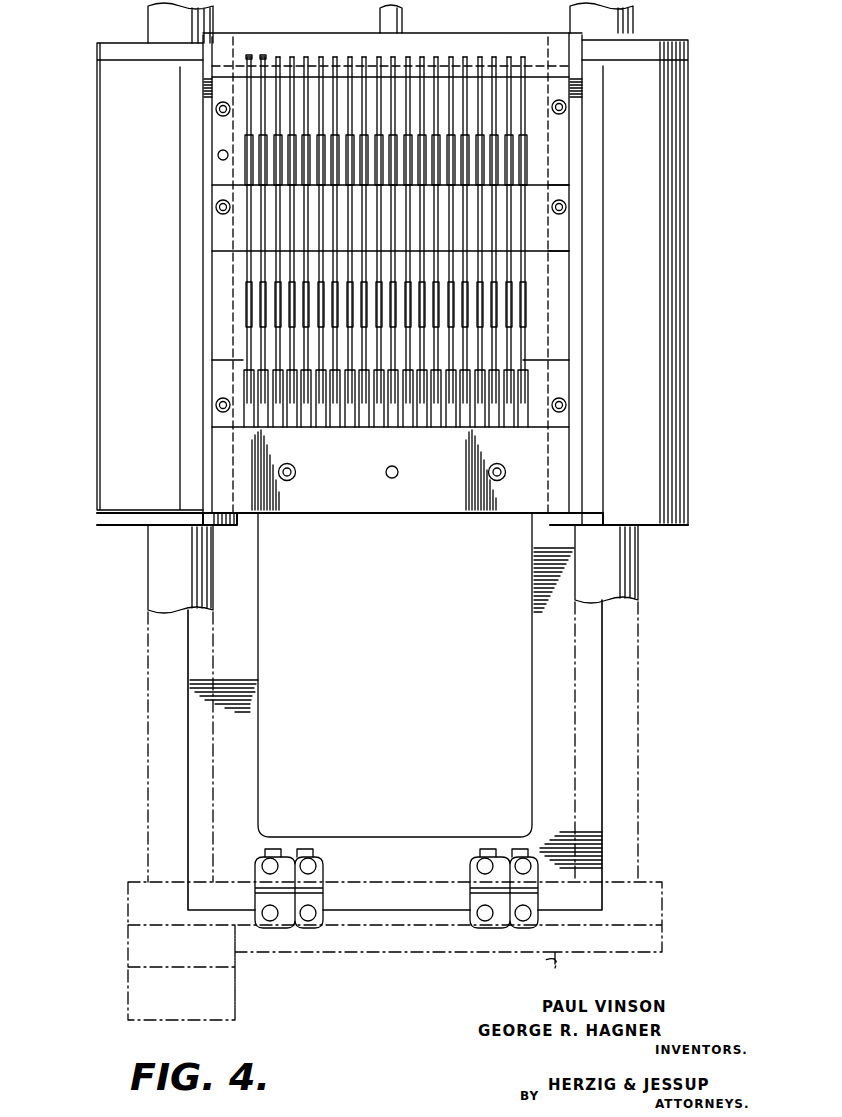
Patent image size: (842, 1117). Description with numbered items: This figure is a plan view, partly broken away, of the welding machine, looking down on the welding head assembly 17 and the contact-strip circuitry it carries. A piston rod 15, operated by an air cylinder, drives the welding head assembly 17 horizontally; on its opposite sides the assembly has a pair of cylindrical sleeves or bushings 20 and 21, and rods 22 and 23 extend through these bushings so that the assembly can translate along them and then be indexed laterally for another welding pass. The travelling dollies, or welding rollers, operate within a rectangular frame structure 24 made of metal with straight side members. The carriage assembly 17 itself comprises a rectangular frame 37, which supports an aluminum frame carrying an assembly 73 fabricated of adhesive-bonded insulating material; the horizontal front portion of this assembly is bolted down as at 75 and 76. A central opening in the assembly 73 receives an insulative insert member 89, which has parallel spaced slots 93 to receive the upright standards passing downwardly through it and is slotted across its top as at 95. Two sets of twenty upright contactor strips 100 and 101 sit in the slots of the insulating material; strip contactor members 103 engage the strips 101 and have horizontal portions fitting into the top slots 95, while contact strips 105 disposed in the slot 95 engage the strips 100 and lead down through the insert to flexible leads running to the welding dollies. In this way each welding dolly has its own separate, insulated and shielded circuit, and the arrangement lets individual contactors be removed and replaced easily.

The piston rod 15 is at (402, 16).
The welding head assembly 17 is at (420, 500).
The cylindrical sleeve or bushing 20 is at (100, 315).
The cylindrical sleeve or bushing 21 is at (653, 348).
The rod 22 is at (153, 590).
The rod 23 is at (623, 583).
The rectangular frame structure 24 is at (607, 745).
The rectangular frame 37 is at (203, 422).
The insulative assembly 73 is at (340, 503).
The bolt 75 is at (498, 480).
The bolt 76 is at (567, 107).
The insulative insert member 89 is at (553, 237).
The parallel spaced slots 93 is at (528, 297).
The top slots 95 is at (523, 342).
The contactor strip 100 is at (247, 55).
The contactor strip 101 is at (263, 55).
The strip contactor member 103 is at (243, 265).
The contact strip 105 is at (240, 337).